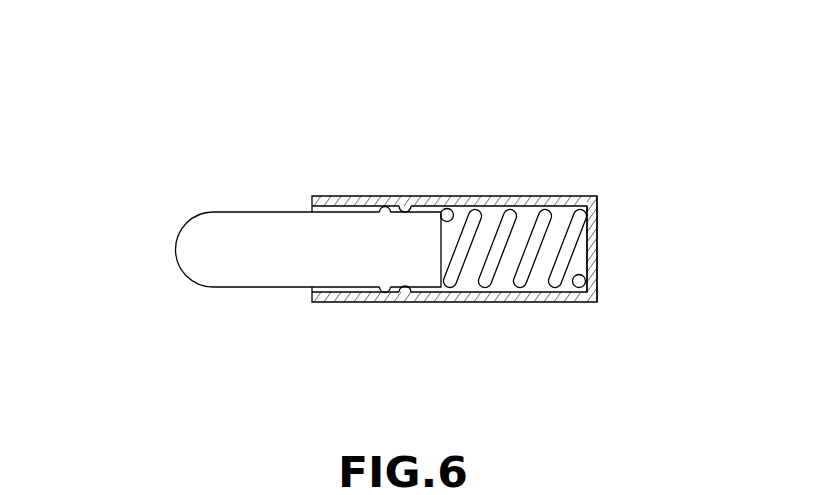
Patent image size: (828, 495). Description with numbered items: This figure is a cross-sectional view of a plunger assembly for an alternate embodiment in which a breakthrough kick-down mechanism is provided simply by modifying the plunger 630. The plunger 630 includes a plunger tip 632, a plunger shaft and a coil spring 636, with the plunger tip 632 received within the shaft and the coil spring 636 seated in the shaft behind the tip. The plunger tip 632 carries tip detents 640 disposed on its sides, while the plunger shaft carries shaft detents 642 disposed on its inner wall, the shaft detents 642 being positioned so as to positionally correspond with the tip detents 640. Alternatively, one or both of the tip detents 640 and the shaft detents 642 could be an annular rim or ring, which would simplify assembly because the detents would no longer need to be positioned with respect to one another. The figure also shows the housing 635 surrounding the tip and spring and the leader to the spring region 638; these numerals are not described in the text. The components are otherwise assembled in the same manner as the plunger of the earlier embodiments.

The plunger 630 is at (196, 128).
The plunger tip 632 is at (213, 213).
The housing 635 is at (525, 197).
The coil spring 636 is at (568, 257).
The spring 638 is at (440, 247).
The tip detents 640 is at (385, 207).
The shaft detents 642 is at (404, 205).